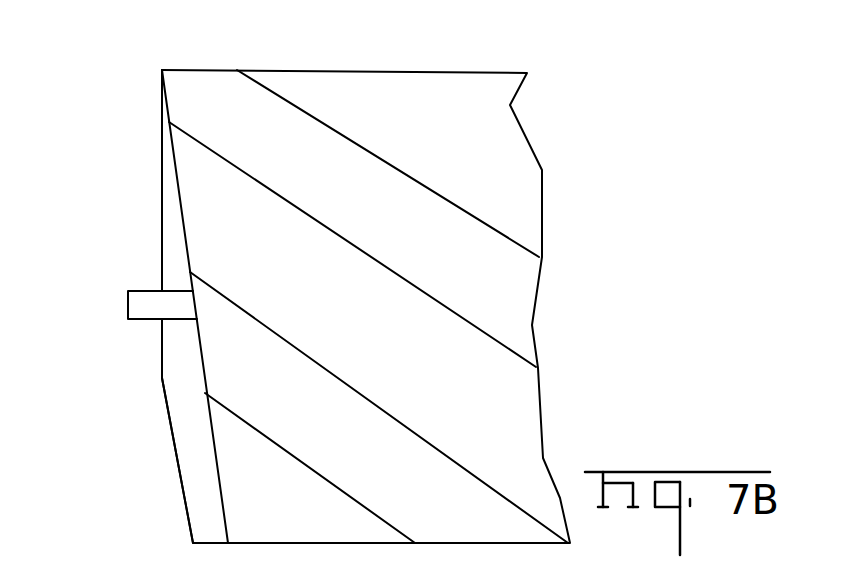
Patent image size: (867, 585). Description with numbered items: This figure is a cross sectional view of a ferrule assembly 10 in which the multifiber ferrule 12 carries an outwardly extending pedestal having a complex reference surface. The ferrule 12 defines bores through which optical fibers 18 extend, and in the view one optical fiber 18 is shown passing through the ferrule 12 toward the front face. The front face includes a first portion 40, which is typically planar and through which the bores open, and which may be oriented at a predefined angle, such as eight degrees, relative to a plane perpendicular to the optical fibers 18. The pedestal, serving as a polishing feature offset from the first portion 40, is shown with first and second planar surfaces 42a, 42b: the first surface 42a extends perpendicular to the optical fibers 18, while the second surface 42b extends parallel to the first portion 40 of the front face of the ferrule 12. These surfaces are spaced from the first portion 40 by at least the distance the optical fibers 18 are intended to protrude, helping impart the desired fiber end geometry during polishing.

The ferrule assembly 10 is at (503, 67).
The multifiber ferrule 12 is at (345, 83).
The optical fibers 18 is at (142, 298).
The first portion 40 is at (200, 352).
The first planar surface 42a is at (162, 178).
The second planar surface 42b is at (178, 472).